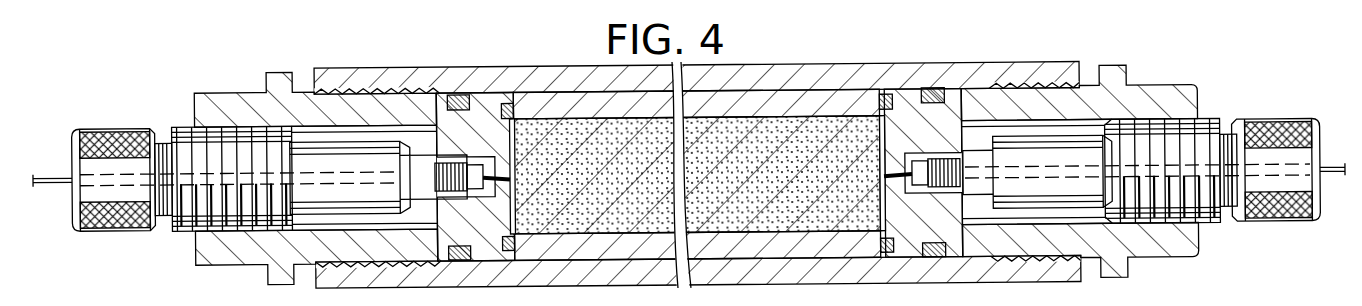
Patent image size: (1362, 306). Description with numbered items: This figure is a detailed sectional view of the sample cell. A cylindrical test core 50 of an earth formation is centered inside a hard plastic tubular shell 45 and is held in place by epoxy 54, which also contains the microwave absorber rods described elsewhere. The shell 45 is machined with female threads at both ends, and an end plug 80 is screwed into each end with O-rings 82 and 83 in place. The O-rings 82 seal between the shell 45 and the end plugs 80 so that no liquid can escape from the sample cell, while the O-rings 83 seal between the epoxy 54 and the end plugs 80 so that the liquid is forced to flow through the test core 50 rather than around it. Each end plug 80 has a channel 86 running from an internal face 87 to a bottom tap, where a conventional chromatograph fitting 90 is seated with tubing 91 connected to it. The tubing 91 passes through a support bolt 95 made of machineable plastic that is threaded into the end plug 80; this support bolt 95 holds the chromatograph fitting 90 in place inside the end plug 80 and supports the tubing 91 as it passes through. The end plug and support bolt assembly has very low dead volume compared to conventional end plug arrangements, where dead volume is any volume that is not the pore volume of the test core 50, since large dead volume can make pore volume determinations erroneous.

The tubular shell 45 is at (843, 66).
The test core 50 is at (652, 188).
The epoxy 54 is at (725, 236).
The end plug 80 is at (236, 90).
The O-ring 82 is at (460, 92).
The O-ring 83 is at (511, 100).
The channel 86 is at (893, 177).
The internal face 87 is at (513, 114).
The chromatograph fitting 90 is at (452, 205).
The tubing 91 is at (50, 170).
The support bolt 95 is at (127, 124).